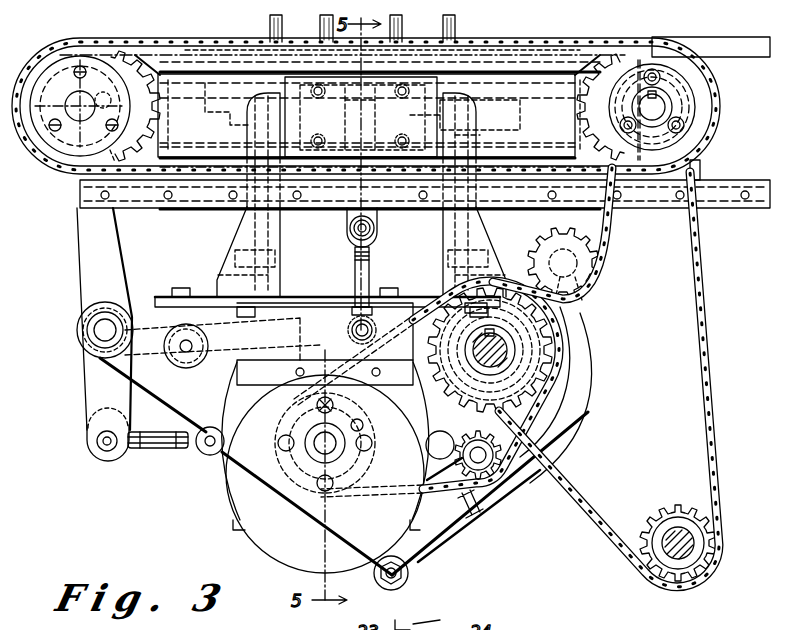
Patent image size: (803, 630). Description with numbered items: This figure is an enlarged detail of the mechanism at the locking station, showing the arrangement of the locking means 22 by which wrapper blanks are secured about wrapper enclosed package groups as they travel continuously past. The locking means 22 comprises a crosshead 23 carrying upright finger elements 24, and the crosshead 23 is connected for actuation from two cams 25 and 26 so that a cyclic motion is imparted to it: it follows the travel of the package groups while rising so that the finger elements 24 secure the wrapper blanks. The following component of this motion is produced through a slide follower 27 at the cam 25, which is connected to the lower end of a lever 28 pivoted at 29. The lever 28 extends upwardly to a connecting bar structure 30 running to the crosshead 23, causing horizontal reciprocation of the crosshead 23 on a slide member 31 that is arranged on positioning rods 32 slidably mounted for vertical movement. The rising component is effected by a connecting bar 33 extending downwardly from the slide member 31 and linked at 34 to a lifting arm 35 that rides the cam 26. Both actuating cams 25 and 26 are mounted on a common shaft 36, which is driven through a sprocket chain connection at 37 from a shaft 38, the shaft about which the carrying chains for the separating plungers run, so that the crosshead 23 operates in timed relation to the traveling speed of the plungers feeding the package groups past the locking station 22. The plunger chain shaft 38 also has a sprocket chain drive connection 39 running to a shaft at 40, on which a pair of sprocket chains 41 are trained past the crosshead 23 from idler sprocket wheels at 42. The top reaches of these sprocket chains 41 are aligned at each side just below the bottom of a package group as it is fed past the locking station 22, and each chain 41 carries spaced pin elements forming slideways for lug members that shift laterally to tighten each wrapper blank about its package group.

The locking means 22 is at (260, 33).
The crosshead 23 is at (532, 40).
The upright finger elements 24 is at (458, 27).
The cam 25 is at (288, 545).
The cam 26 is at (245, 505).
The slide follower 27 is at (205, 475).
The lever 28 is at (88, 399).
The pivot 29 is at (98, 330).
The connecting bar structure 30 is at (192, 112).
The slide member 31 is at (520, 108).
The positioning rods 32 is at (480, 143).
The connecting bar 33 is at (378, 233).
The link 34 is at (372, 265).
The lifting arm 35 is at (298, 318).
The common shaft 36 is at (322, 450).
The sprocket chain connection 37 is at (520, 465).
The plunger chain shaft 38 is at (502, 352).
The sprocket chain drive connection 39 is at (706, 373).
The shaft 40 is at (652, 107).
The sprocket chains 41 is at (720, 82).
The idler sprocket wheels 42 is at (50, 150).